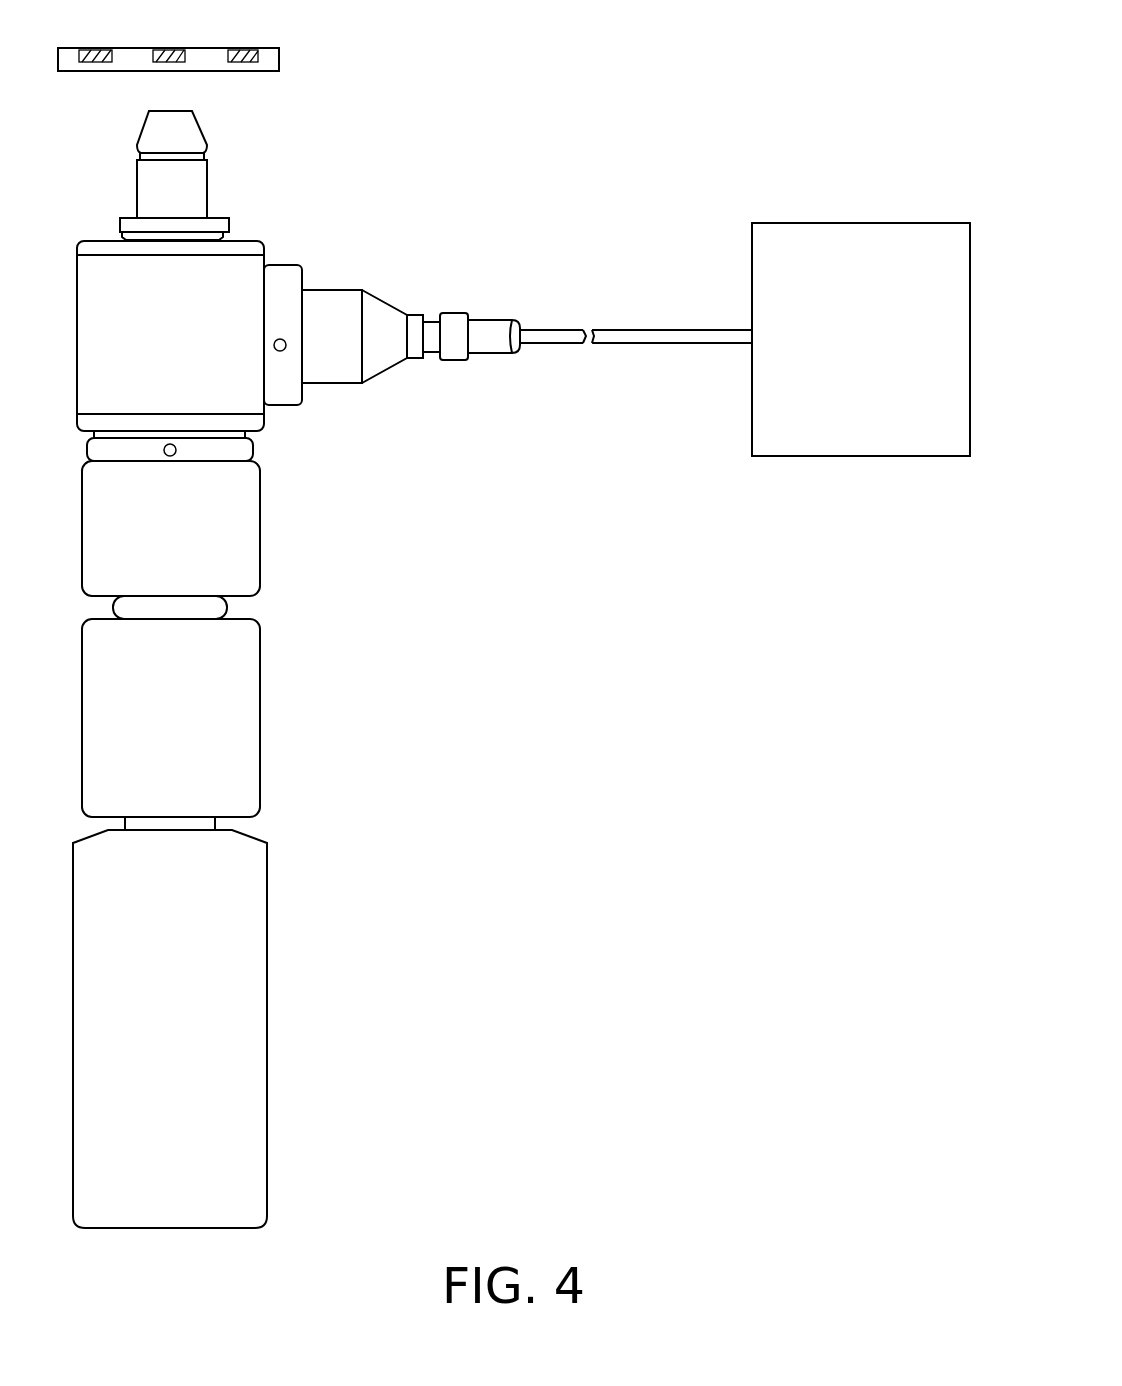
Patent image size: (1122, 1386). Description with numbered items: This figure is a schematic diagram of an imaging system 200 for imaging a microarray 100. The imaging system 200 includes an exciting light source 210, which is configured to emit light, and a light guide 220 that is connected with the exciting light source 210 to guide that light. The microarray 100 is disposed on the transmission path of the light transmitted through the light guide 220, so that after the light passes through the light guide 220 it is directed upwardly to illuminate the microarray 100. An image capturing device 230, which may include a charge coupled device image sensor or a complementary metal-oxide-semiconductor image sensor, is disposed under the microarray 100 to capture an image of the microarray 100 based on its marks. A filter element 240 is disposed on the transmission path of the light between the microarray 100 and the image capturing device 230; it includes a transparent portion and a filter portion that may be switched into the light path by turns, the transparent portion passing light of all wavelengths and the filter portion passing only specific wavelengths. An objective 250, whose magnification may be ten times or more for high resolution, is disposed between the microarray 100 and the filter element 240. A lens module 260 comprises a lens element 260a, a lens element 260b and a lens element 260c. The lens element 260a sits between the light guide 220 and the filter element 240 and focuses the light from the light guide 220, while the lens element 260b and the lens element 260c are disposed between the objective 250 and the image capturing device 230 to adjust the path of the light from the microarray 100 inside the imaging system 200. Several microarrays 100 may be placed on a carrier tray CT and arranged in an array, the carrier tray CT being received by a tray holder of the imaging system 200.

The microarray 100 is at (243, 50).
The carrier tray CT is at (272, 60).
The imaging system 200 is at (655, 1163).
The exciting light source 210 is at (862, 435).
The light guide 220 is at (633, 337).
The image capturing device 230 is at (251, 1056).
The filter element 240 is at (233, 280).
The objective 250 is at (198, 196).
The lens module 260 is at (314, 560).
The lens element 260a is at (338, 351).
The lens element 260b is at (240, 499).
The lens element 260c is at (225, 699).